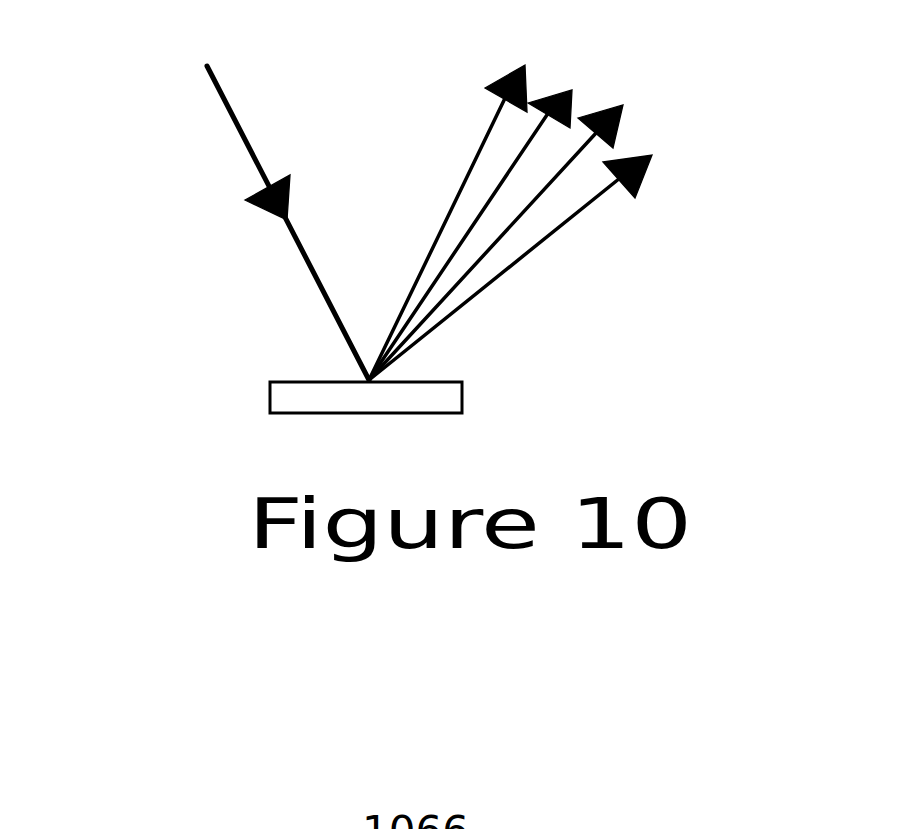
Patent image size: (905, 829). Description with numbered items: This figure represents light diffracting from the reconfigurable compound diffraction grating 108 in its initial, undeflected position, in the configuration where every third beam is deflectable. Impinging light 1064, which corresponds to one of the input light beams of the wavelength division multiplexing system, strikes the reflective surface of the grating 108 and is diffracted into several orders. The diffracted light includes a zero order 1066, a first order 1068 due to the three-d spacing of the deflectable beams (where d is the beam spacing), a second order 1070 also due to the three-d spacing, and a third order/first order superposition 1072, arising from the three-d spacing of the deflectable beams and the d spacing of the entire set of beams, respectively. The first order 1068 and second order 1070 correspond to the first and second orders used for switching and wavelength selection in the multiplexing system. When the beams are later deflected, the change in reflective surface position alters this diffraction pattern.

The reconfigurable compound diffraction grating 108 is at (433, 400).
The impinging light 1064 is at (247, 145).
The zero order 1066 is at (485, 138).
The first order 1068 is at (562, 92).
The second order 1070 is at (623, 122).
The third order/first order superposition 1072 is at (593, 208).